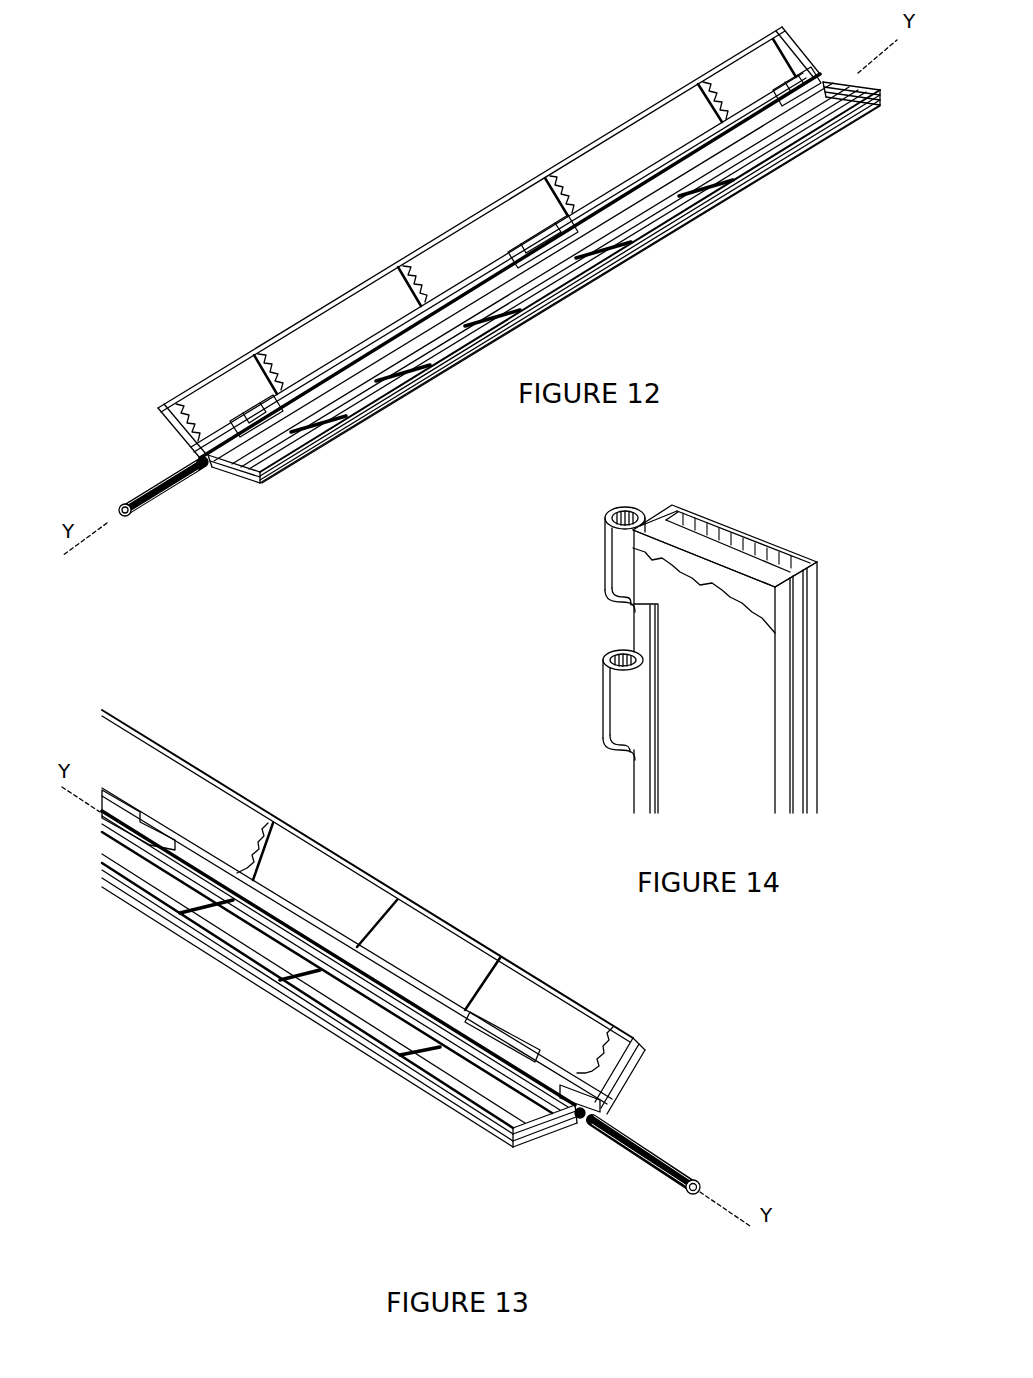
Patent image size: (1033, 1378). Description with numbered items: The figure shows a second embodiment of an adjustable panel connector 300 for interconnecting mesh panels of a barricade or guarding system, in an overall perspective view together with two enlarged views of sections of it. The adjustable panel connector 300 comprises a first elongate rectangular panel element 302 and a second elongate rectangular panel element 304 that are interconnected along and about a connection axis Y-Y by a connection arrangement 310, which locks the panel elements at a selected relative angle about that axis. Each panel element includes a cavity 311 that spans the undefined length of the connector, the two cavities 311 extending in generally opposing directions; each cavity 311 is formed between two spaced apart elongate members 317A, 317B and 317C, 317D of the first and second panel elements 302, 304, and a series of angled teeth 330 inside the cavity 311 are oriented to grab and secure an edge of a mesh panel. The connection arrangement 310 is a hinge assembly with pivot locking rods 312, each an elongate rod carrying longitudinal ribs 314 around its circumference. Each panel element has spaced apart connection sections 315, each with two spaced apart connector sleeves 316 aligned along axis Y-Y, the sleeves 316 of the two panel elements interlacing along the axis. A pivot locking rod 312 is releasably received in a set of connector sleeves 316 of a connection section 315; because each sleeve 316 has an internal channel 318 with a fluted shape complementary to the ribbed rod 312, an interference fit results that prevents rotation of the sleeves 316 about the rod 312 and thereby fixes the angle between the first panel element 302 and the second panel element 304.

In FIG. 13, the adjustable panel connector 300 is at (262, 1077).
In FIG. 13, the first elongate rectangular panel element 302 is at (240, 925).
In FIG. 12, the second elongate rectangular panel element 304 is at (600, 248).
In FIG. 13, the second elongate rectangular panel element 304 is at (395, 930).
In FIG. 14, the second elongate rectangular panel element 304 is at (615, 628).
In FIG. 12, the connection arrangement 310 is at (150, 468).
In FIG. 12, the cavities 311 is at (720, 200).
In FIG. 14, the cavities 311 is at (800, 757).
In FIG. 12, the pivot locking rod 312 is at (190, 485).
In FIG. 13, the pivot locking rod 312 is at (663, 1157).
In FIG. 12, the longitudinal ribs 314 is at (148, 516).
In FIG. 13, the longitudinal ribs 314 is at (662, 1180).
In FIG. 12, the connection sections 315 is at (770, 78).
In FIG. 13, the connection sections 315 is at (122, 852).
In FIG. 13, the connector sleeves 316 is at (160, 778).
In FIG. 14, the connector sleeves 316 is at (620, 570).
In FIG. 12, the elongate member 317A is at (372, 303).
In FIG. 13, the elongate member 317A is at (470, 1085).
In FIG. 12, the elongate member 317B is at (160, 416).
In FIG. 13, the elongate member 317B is at (503, 1143).
In FIG. 12, the elongate member 317C is at (388, 392).
In FIG. 13, the elongate member 317C is at (590, 1030).
In FIG. 14, the elongate member 317C is at (722, 797).
In FIG. 12, the elongate member 317D is at (300, 448).
In FIG. 13, the elongate member 317D is at (640, 1057).
In FIG. 14, the elongate member 317D is at (830, 725).
In FIG. 13, the internal channel 318 is at (578, 1122).
In FIG. 14, the internal channel 318 is at (622, 506).
In FIG. 14, the angled teeth 330 is at (815, 632).